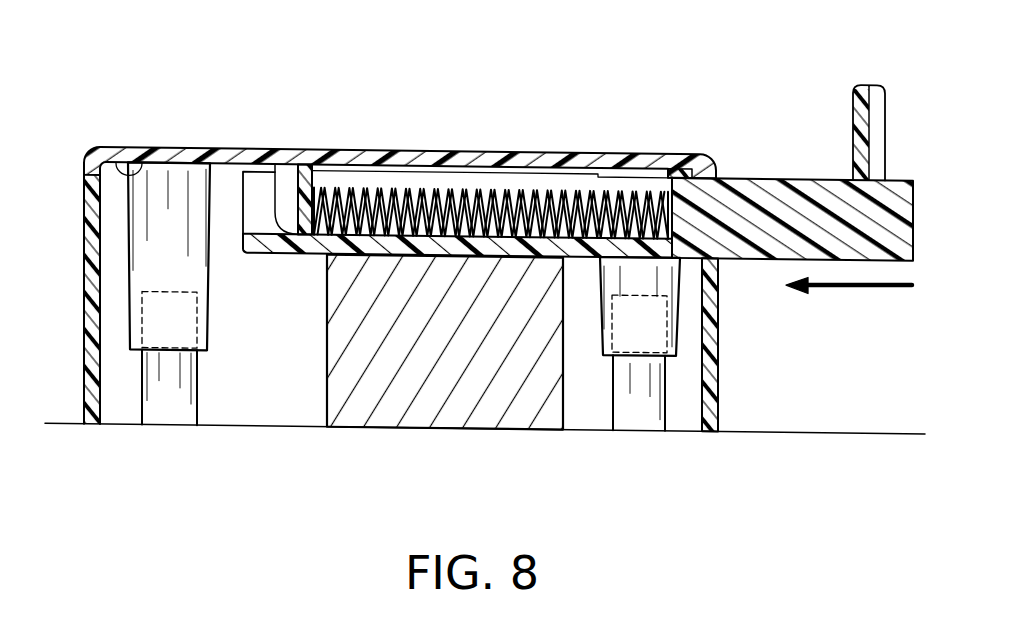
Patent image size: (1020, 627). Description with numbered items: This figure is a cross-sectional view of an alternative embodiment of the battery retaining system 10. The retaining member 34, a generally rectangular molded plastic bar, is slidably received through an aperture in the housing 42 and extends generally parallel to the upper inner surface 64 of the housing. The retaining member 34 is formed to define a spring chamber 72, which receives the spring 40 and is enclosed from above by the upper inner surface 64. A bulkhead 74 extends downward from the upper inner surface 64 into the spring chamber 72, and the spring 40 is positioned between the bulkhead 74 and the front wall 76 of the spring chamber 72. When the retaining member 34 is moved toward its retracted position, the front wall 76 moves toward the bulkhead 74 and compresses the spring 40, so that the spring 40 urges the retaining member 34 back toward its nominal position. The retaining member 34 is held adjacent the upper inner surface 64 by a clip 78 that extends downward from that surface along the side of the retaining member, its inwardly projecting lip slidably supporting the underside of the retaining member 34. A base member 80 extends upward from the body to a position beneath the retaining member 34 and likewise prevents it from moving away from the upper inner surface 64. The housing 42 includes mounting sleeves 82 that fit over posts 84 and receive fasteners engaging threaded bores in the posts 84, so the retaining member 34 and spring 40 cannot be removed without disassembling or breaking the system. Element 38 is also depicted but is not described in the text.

The battery retaining system 10 is at (598, 51).
The retaining member 34 is at (748, 257).
The post 38 is at (867, 77).
The spring 40 is at (362, 185).
The housing 42 is at (163, 146).
The upper inner surface 64 is at (124, 163).
The spring chamber 72 is at (398, 184).
The bulkhead 74 is at (300, 188).
The front wall 76 is at (668, 168).
The clip 78 is at (505, 173).
The base member 80 is at (352, 412).
The mounting sleeve 82 is at (203, 257).
The post 84 is at (182, 399).